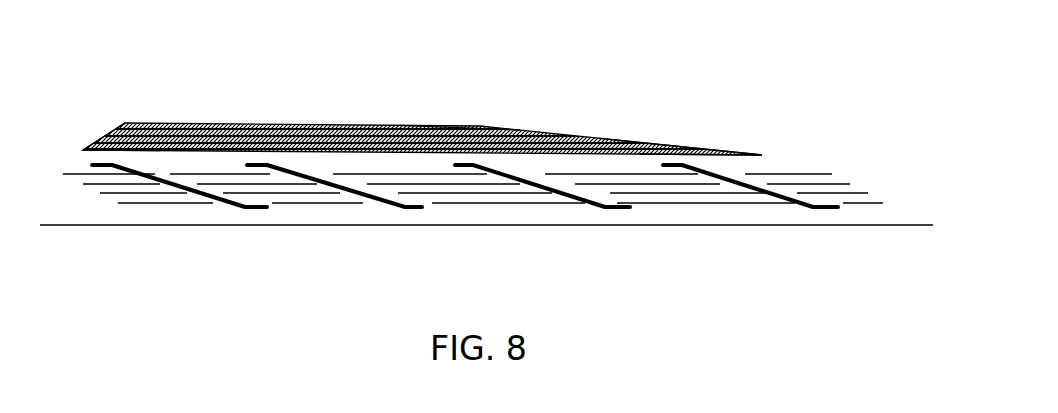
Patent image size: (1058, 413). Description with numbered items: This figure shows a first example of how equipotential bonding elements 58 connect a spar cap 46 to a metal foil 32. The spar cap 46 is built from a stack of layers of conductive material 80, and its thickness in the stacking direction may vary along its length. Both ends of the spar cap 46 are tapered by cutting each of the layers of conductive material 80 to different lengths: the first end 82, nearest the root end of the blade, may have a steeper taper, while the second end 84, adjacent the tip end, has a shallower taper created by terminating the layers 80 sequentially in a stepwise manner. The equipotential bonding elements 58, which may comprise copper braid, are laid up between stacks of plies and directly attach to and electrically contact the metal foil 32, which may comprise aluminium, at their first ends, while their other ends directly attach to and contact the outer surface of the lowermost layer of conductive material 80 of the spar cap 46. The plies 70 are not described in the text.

The metal foil 32 is at (375, 242).
The layer lines 70 is at (69, 207).
The equipotential bonding elements 58 is at (238, 209).
The layers of conductive material 80 is at (157, 124).
The first end 82 is at (110, 117).
The spar cap 46 is at (478, 111).
The second end 84 is at (696, 128).